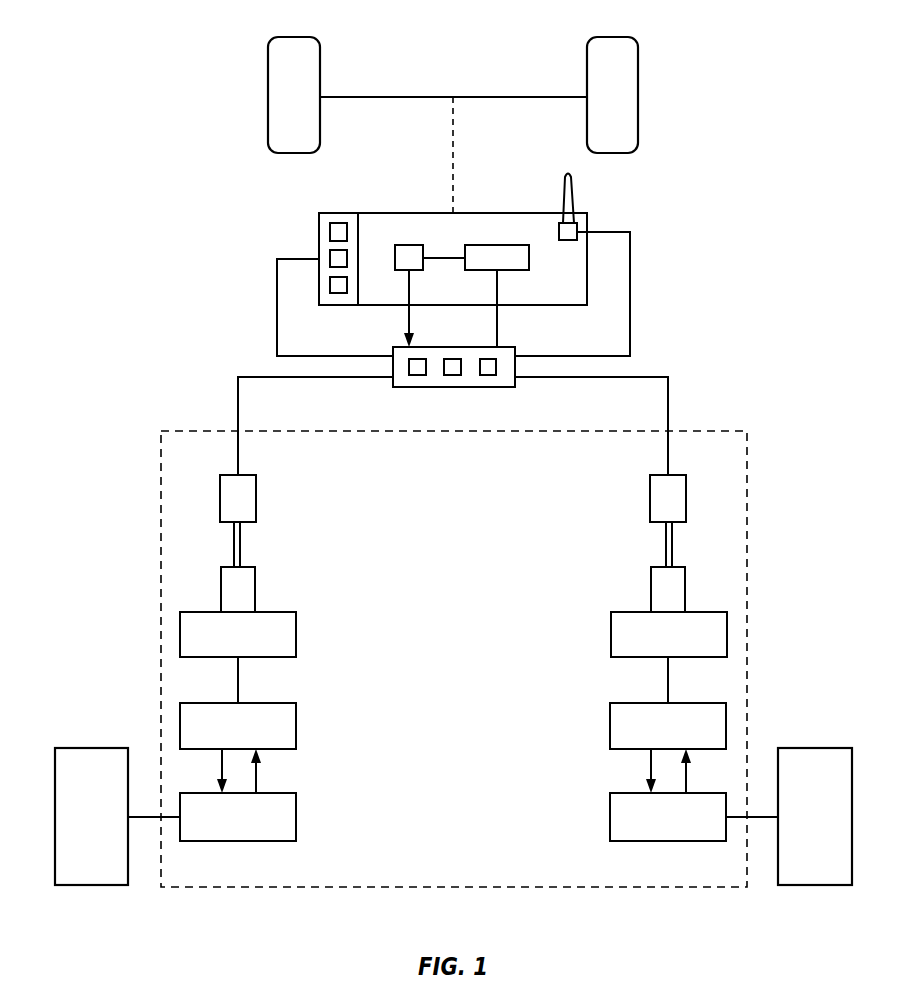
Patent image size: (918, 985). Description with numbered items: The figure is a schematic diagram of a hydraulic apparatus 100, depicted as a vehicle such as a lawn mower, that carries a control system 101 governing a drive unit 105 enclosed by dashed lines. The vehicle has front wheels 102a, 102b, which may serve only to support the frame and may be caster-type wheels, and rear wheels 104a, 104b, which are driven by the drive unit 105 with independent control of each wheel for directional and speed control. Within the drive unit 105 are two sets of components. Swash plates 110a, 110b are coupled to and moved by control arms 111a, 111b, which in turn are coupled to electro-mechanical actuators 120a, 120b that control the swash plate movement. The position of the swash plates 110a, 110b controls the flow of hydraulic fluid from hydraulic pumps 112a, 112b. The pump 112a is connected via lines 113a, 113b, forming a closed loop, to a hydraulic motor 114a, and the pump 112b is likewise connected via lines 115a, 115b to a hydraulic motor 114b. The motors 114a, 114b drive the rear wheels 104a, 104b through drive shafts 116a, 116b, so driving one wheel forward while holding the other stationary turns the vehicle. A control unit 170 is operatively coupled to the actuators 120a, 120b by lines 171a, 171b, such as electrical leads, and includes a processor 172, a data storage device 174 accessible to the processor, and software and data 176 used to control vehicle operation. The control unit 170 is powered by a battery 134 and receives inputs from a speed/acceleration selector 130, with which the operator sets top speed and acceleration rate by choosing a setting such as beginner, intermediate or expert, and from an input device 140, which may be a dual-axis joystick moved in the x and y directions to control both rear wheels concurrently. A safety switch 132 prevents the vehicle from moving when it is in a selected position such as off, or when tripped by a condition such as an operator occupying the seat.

The hydraulic apparatus 100 is at (148, 44).
The control system 101 is at (190, 245).
The front wheel 102a is at (268, 95).
The front wheel 102b is at (638, 97).
The rear wheel 104a is at (90, 885).
The rear wheel 104b is at (815, 885).
The drive unit 105 is at (747, 447).
The swash plate 110a is at (296, 635).
The swash plate 110b is at (611, 635).
The control arm 111a is at (255, 588).
The control arm 111b is at (651, 588).
The hydraulic pump 112a is at (296, 725).
The hydraulic pump 112b is at (610, 725).
The line 113a is at (218, 775).
The line 113b is at (256, 782).
The hydraulic motor 114a is at (296, 817).
The hydraulic motor 114b is at (610, 817).
The line 115a is at (651, 756).
The line 115b is at (686, 774).
The drive shaft 116a is at (150, 817).
The drive shaft 116b is at (760, 817).
The actuator 120a is at (256, 498).
The actuator 120b is at (650, 498).
The speed/acceleration selector 130 is at (315, 206).
The safety switch 132 is at (409, 245).
The battery 134 is at (498, 245).
The input device 140 is at (577, 229).
The control unit 170 is at (515, 353).
The line 171a is at (238, 405).
The line 171b is at (668, 403).
The processor 172 is at (409, 372).
The data storage device 174 is at (452, 378).
The software and data 176 is at (496, 372).